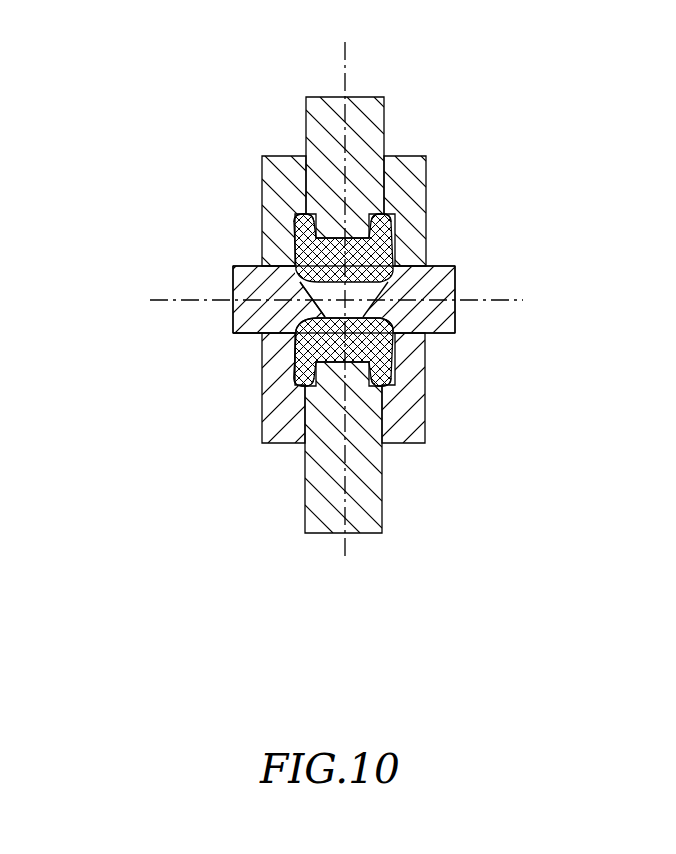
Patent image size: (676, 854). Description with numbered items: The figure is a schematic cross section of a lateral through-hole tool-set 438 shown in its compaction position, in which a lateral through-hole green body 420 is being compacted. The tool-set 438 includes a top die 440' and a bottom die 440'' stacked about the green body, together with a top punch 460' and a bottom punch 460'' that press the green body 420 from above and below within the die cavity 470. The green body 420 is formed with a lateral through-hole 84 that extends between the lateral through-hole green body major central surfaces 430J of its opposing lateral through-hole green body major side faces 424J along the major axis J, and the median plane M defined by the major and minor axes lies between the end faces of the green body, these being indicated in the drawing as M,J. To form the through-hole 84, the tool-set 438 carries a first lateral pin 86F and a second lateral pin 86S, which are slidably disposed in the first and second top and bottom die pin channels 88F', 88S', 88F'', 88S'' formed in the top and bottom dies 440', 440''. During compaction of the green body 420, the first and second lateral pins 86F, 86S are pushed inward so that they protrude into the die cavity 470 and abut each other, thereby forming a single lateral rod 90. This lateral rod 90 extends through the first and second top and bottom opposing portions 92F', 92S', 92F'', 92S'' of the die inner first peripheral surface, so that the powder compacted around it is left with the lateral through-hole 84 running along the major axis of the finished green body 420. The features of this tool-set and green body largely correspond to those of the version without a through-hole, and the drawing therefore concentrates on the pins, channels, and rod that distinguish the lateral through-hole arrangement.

The lateral through-hole tool-set 438 is at (236, 174).
The top punch 460' is at (378, 146).
The bottom punch 460'' is at (410, 447).
The top die 440' is at (405, 211).
The bottom die 440'' is at (403, 405).
The second lateral pin 86S is at (233, 283).
The first lateral pin 86F is at (524, 299).
The second top die pin channel 88S' is at (184, 253).
The second bottom die pin channel 88S'' is at (186, 317).
The first top die pin channel 88F' is at (471, 264).
The first bottom die pin channel 88F'' is at (485, 325).
The lateral through-hole green body 420 is at (397, 251).
The lateral through-hole green body major central surface 430J is at (392, 338).
The lateral through-hole green body major side face 424J is at (396, 360).
The die cavity 470 is at (293, 336).
The second top opposing portion of the die inner first peripheral surface 92S' is at (228, 217).
The first top opposing portion of the die inner first peripheral surface 92F' is at (455, 207).
The second bottom opposing portion of the die inner first peripheral surface 92S'' is at (243, 413).
The first bottom opposing portion of the die inner first peripheral surface 92F'' is at (497, 394).
The lateral rod 90 is at (296, 323).
The lateral through-hole 84 is at (257, 335).
The median plane and major axis M,J is at (455, 291).